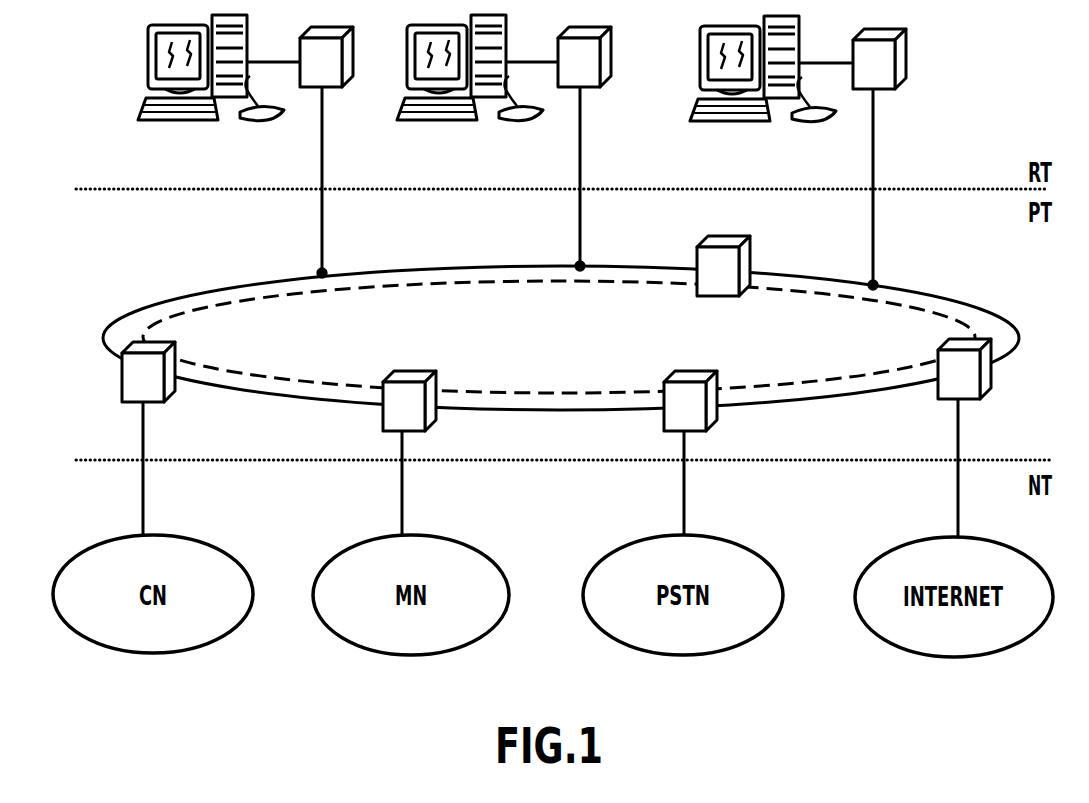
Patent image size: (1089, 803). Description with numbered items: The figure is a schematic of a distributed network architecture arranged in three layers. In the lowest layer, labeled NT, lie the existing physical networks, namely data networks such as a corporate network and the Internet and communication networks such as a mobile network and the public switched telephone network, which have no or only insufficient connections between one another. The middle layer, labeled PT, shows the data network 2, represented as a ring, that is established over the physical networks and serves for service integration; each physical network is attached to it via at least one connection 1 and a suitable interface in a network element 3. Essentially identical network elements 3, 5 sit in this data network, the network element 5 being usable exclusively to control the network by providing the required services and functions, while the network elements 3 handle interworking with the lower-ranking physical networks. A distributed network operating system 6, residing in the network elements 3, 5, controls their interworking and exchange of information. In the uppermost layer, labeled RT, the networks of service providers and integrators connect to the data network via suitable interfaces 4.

The connection 1 is at (143, 493).
The data network 2 is at (272, 392).
The network element 3 is at (122, 371).
The interface 4 is at (322, 160).
The network element 5 is at (750, 250).
The distributed network operating system 6 is at (465, 273).